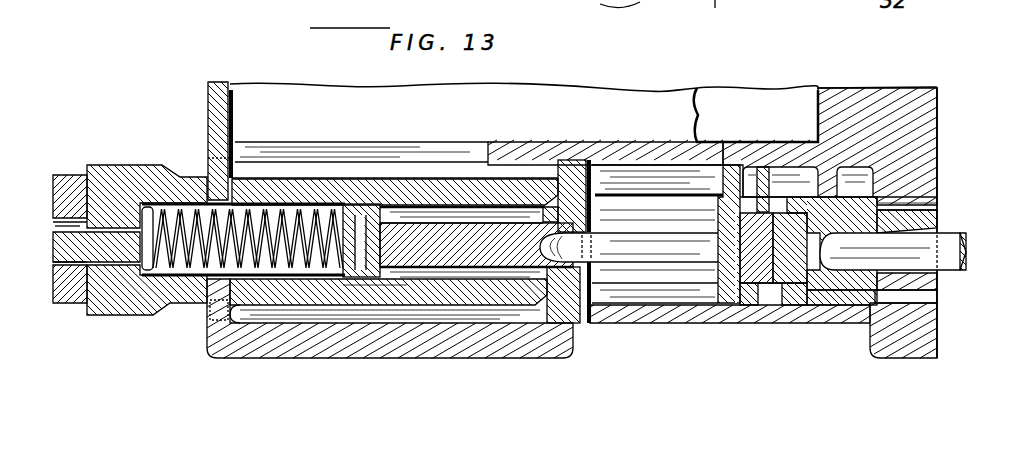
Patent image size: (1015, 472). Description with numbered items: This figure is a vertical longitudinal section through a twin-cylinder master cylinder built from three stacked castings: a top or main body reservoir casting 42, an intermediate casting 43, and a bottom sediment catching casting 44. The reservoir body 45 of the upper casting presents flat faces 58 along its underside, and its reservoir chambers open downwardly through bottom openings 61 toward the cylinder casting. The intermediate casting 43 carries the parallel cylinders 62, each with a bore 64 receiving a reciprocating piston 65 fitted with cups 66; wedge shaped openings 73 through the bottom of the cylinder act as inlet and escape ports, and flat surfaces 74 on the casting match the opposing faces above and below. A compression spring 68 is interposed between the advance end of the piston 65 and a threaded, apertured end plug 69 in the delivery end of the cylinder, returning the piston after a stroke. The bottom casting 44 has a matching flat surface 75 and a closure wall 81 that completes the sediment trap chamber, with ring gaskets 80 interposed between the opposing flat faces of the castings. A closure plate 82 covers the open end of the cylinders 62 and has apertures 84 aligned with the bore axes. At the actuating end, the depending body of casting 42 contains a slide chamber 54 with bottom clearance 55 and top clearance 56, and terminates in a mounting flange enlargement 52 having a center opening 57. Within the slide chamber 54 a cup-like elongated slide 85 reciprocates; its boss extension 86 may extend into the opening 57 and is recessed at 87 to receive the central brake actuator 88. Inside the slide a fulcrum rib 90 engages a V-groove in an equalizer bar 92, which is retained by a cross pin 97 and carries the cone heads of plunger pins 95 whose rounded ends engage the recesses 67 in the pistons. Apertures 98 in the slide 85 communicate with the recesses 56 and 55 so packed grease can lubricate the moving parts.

The top or main body reservoir casting 42 is at (942, 102).
The intermediate casting 43 is at (183, 175).
The bottom piece or sediment catching casting 44 is at (447, 362).
The reservoir body 45 is at (213, 99).
The mounting flange enlargement 52 is at (910, 352).
The slide chamber 54 is at (672, 302).
The bottom clearance 55 is at (745, 322).
The top clearance 56 is at (713, 173).
The center opening 57 is at (923, 298).
The flat faces 58 is at (219, 158).
The bottom openings 61 is at (411, 152).
The cylinders 62 is at (445, 190).
The cylinder bore 64 is at (205, 283).
The reciprocating piston 65 is at (500, 228).
The cups 66 is at (362, 203).
The piston end recess 67 is at (614, 256).
The compression spring 68 is at (290, 215).
The end plug 69 is at (66, 176).
The wedge shaped openings 73 is at (385, 296).
The flat surfaces 74 is at (236, 176).
The matching flat surface 75 is at (222, 329).
The ring gaskets 80 is at (212, 155).
The bottom or closure wall 81 is at (313, 347).
The closure plate 82 is at (628, 142).
The apertures 84 is at (596, 230).
The cup-like elongated slide 85 is at (833, 288).
The boss extension 86 is at (923, 212).
The recess 87 is at (870, 282).
The brake actuator 88 is at (950, 236).
The fulcrum rib 90 is at (795, 218).
The equalizer bar 92 is at (757, 270).
The plunger pins 95 is at (666, 253).
The cross pin 97 is at (740, 228).
The apertures 98 is at (762, 170).